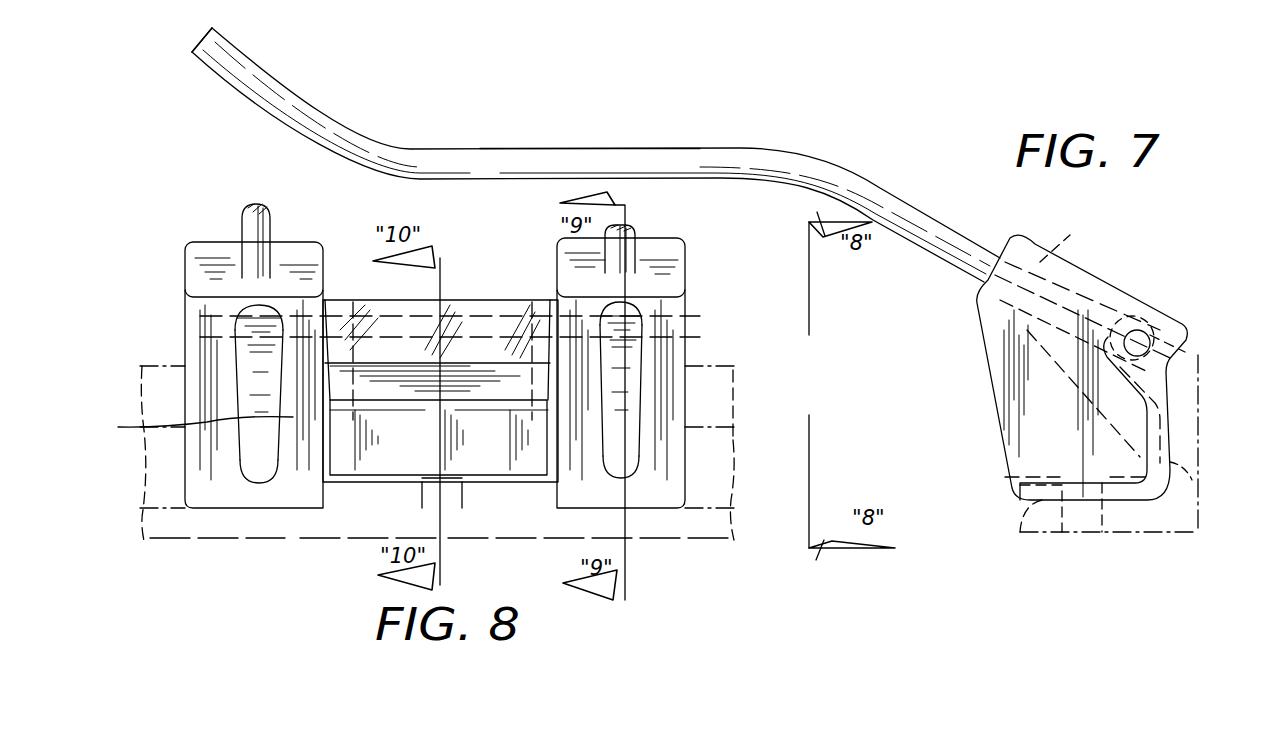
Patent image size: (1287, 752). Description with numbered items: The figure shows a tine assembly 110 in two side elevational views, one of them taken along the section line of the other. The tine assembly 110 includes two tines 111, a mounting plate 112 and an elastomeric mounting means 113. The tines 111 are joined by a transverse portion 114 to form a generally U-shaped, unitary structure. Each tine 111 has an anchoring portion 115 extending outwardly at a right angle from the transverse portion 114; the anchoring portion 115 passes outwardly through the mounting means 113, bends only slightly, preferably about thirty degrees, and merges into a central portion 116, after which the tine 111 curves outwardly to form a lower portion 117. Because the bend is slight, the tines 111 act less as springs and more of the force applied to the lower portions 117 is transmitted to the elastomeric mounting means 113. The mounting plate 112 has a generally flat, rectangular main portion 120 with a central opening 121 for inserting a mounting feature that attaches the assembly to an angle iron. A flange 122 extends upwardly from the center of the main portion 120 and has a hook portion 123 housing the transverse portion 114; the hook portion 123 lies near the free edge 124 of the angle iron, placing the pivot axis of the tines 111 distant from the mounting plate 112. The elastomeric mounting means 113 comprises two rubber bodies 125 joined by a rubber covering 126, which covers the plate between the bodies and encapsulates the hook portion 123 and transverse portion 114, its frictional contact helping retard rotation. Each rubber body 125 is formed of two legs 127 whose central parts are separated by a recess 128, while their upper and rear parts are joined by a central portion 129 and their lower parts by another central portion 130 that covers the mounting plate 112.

In FIG. 7, the tine assembly 110 is at (596, 155).
In FIG. 8, the tine assembly 110 is at (450, 362).
In FIG. 7, the tine 111 is at (772, 152).
In FIG. 8, the tine 111 is at (262, 225).
In FIG. 7, the mounting plate 112 is at (1190, 478).
In FIG. 8, the mounting plate 112 is at (668, 465).
In FIG. 7, the elastomeric mounting means 113 is at (1062, 280).
In FIG. 8, the elastomeric mounting means 113 is at (297, 480).
In FIG. 7, the transverse portion 114 is at (1137, 343).
In FIG. 8, the transverse portion 114 is at (450, 339).
In FIG. 7, the anchoring portion 115 is at (1035, 262).
In FIG. 7, the central portion 116 is at (485, 158).
In FIG. 7, the lower portion 117 is at (256, 82).
In FIG. 7, the main portion 120 is at (1032, 493).
In FIG. 8, the central opening 121 is at (456, 488).
In FIG. 7, the flange 122 is at (1162, 438).
In FIG. 7, the hook portion 123 is at (1180, 318).
In FIG. 8, the hook portion 123 is at (487, 330).
In FIG. 7, the free edge 124 is at (1198, 355).
In FIG. 7, the rubber body 125 is at (1006, 392).
In FIG. 8, the rubber body 125 is at (438, 409).
In FIG. 8, the rubber covering 126 is at (455, 320).
In FIG. 8, the leg 127 is at (718, 337).
In FIG. 8, the recess 128 is at (432, 352).
In FIG. 8, the central portion 129 is at (263, 330).
In FIG. 8, the central portion 130 is at (262, 480).